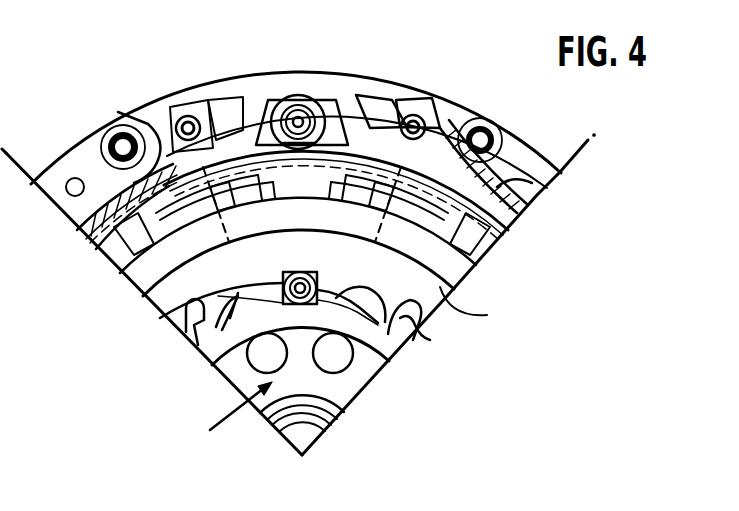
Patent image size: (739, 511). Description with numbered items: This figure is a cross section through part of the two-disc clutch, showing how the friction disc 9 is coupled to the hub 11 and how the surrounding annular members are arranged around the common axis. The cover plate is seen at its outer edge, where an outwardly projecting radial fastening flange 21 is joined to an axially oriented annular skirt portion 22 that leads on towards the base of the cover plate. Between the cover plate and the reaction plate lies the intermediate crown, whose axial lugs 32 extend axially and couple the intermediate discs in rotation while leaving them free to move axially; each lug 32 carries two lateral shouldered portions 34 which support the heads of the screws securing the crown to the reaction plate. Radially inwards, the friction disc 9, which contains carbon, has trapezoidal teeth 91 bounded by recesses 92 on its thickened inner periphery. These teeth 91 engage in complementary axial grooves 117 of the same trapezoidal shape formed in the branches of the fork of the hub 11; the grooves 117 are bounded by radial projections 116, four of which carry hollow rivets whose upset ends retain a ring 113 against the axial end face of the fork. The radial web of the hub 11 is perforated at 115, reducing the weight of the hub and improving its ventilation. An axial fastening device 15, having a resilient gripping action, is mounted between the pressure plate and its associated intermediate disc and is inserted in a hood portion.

The friction disc 9 is at (431, 313).
The hub 11 is at (225, 417).
The axial fastening device 15 is at (312, 96).
The radial fastening flange 21 is at (528, 138).
The skirt portion 22 is at (532, 183).
The axial lugs 32 is at (379, 112).
The lateral shouldered portions 34 is at (403, 83).
The teeth 91 is at (262, 348).
The recesses 92 is at (193, 335).
The ring 113 is at (255, 292).
The perforations 115 is at (343, 357).
The projections 116 is at (430, 340).
The axial grooves 117 is at (403, 362).